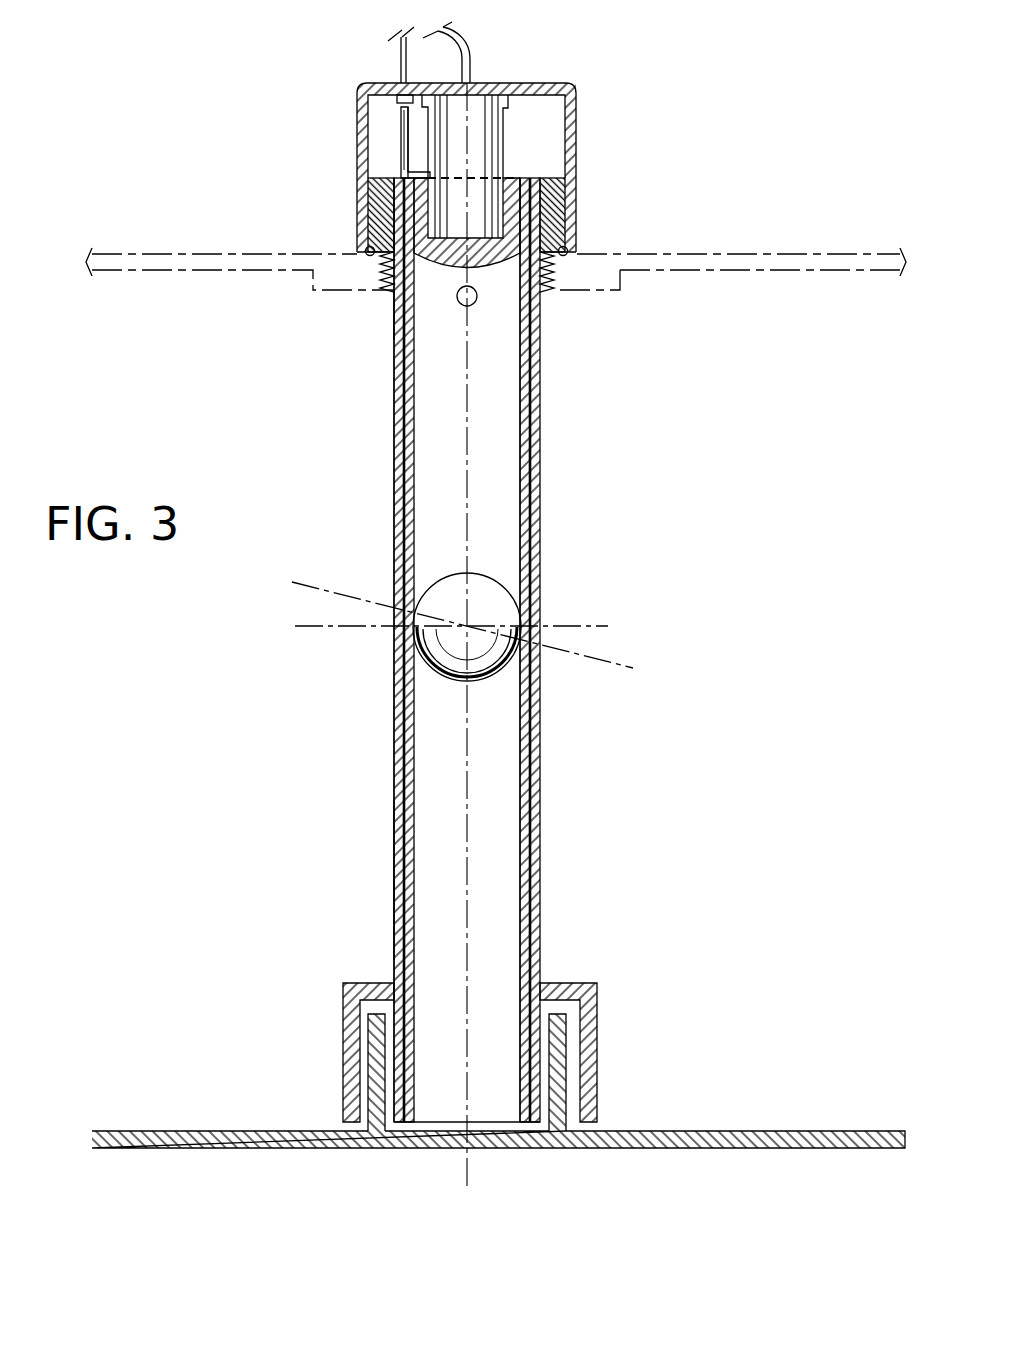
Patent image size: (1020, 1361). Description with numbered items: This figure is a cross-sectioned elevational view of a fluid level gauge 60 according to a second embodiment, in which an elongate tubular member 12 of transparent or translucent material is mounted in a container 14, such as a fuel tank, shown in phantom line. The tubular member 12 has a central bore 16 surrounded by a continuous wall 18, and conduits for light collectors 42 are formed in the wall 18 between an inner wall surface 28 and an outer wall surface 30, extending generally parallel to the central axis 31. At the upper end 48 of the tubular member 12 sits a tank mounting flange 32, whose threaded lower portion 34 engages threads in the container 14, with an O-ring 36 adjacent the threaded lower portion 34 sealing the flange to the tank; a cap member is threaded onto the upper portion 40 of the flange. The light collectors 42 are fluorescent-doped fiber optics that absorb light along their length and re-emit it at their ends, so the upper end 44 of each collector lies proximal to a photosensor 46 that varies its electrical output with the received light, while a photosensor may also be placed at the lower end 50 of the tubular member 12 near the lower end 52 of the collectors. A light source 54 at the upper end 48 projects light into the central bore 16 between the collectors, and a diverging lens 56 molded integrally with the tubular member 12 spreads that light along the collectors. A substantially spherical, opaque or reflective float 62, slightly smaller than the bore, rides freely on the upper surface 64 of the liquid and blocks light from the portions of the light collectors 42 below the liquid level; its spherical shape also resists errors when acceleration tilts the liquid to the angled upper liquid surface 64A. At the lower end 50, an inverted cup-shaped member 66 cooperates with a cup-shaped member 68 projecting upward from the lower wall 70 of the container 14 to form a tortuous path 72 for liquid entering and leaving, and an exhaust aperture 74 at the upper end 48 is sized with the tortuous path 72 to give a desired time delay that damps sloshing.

The tubular member 12 is at (545, 439).
The container 14 is at (217, 253).
The central bore 16 is at (496, 537).
The wall 18 is at (541, 556).
The inner wall surface 28 is at (423, 450).
The outer wall surface 30 is at (397, 448).
The central axis 31 is at (467, 910).
The tank mounting flange 32 is at (582, 223).
The threaded lower portion 34 is at (553, 281).
The O-ring 36 is at (372, 257).
The upper portion 40 is at (577, 210).
The light collector 42 is at (402, 160).
The upper end 44 is at (402, 113).
The photosensor 46 is at (392, 100).
The upper end 48 is at (518, 178).
The lower end 50 is at (397, 849).
The lower end 52 is at (397, 916).
The light source 54 is at (510, 125).
The diverging lens 56 is at (393, 316).
The fluid level gauge 60 is at (724, 111).
The float 62 is at (450, 597).
The upper surface 64 is at (608, 626).
The angled upper liquid surface 64A is at (633, 668).
The inverted cup-shaped member 66 is at (343, 1000).
The cup-shaped member 68 is at (372, 1057).
The lower wall 70 is at (213, 1132).
The tortuous path 72 is at (598, 1011).
The exhaust aperture 74 is at (473, 305).